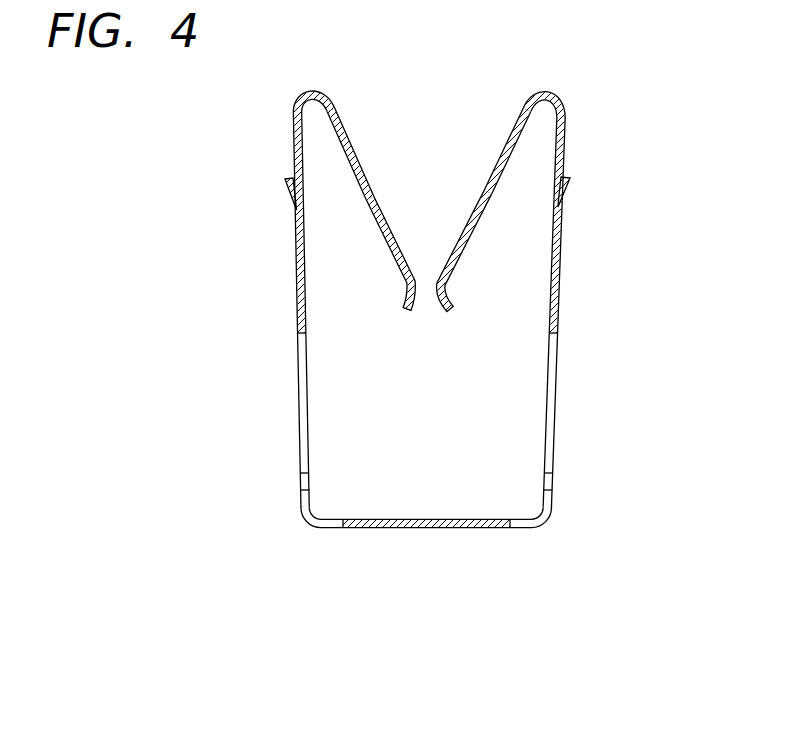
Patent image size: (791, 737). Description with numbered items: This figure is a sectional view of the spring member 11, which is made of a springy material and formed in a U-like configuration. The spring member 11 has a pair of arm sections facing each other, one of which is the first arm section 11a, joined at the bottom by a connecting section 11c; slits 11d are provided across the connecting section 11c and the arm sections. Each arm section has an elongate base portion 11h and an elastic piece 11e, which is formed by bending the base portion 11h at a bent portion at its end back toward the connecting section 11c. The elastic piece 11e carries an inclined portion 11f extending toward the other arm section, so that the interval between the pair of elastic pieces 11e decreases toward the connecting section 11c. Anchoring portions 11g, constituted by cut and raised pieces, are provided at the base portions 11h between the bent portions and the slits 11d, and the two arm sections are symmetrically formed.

The spring member 11 is at (290, 261).
The first arm section 11a is at (292, 126).
The connecting section 11c is at (400, 530).
The slits 11d is at (567, 127).
The elastic piece 11e is at (347, 128).
The inclined portion 11f is at (374, 180).
The anchoring portions 11g is at (285, 195).
The base portion 11h is at (293, 298).